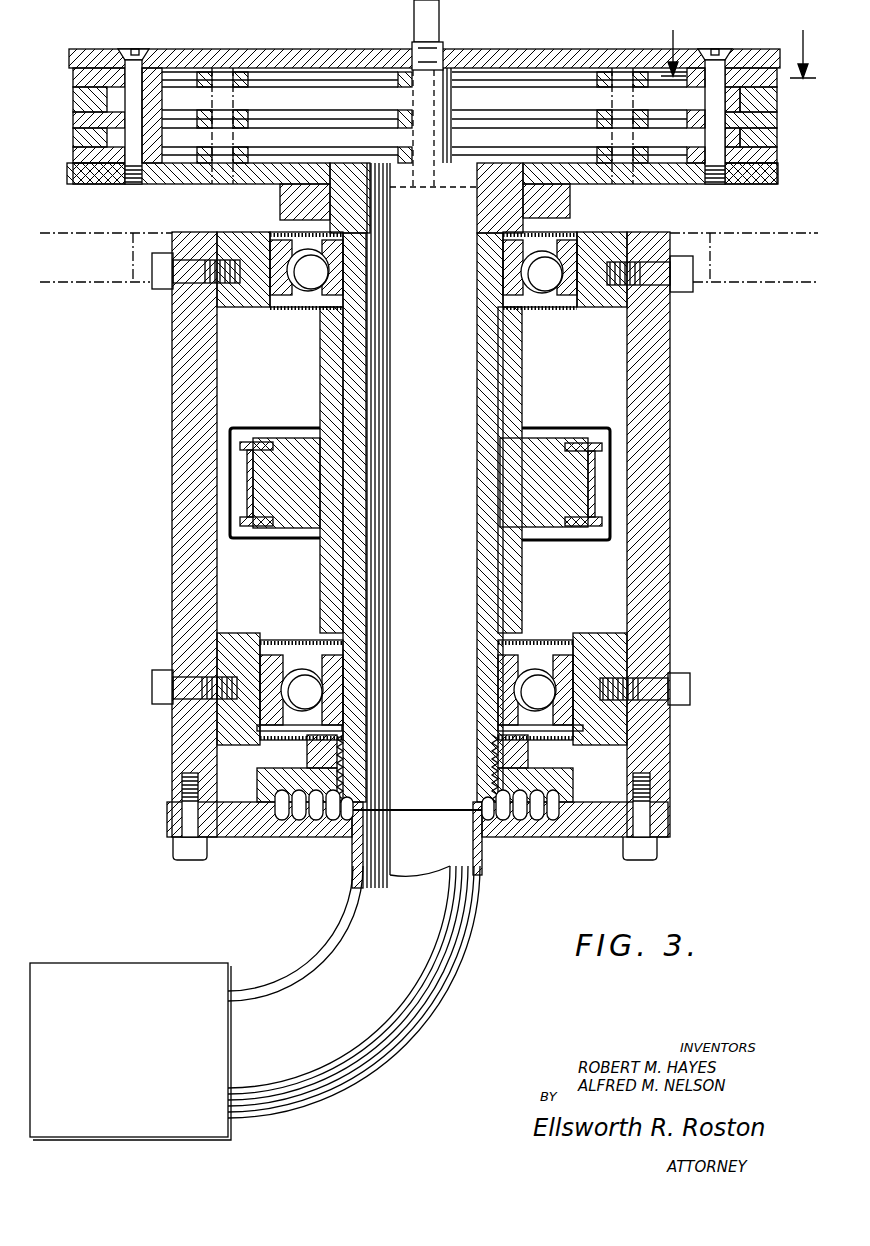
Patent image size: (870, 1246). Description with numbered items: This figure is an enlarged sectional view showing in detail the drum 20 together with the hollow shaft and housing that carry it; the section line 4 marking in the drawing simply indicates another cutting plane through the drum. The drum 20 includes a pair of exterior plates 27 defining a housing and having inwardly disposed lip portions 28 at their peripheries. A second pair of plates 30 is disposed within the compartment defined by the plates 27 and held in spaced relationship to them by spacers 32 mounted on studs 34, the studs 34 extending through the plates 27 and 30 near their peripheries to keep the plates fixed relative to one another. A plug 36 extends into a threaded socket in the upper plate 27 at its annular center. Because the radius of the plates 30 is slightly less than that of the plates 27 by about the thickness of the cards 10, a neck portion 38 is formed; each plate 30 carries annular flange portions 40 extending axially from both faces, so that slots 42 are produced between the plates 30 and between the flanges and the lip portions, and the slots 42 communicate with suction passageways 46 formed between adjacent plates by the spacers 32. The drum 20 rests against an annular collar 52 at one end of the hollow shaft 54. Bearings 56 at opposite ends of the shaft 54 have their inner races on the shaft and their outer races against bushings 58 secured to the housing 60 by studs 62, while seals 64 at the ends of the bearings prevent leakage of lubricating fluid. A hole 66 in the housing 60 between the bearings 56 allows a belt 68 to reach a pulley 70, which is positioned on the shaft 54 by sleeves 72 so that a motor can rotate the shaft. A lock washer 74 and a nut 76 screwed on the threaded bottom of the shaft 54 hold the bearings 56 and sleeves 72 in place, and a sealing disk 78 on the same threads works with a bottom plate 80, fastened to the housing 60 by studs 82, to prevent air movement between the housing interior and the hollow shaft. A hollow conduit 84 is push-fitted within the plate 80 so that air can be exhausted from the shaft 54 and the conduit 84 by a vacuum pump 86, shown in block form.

The section line 4- 4 is at (738, 42).
The cards 10 is at (73, 144).
The drum 20 is at (582, 46).
The exterior plates 27 is at (534, 54).
The lip portions 28 is at (102, 72).
The plates 30 is at (73, 126).
The spacers 32 is at (152, 70).
The studs 34 is at (129, 48).
The plug 36 is at (413, 20).
The neck portion 38 is at (778, 105).
The annular flange portions 40 is at (73, 92).
The slots 42 is at (330, 70).
The suction passageways 46 is at (538, 82).
The annular collar 52 is at (570, 200).
The hollow shaft 54 is at (483, 356).
The bearings 56 is at (528, 272).
The bushings 58 is at (602, 296).
The housing 60 is at (660, 541).
The studs 62 is at (151, 291).
The seals 64 is at (562, 232).
The hole 66 is at (588, 432).
The belt 68 is at (593, 483).
The pulley 70 is at (540, 444).
The sleeves 72 is at (510, 370).
The lock washer 74 is at (330, 729).
The nut 76 is at (318, 757).
The sealing disk 78 is at (270, 784).
The bottom plate 80 is at (550, 836).
The studs 82 is at (180, 848).
The hollow conduit 84 is at (353, 866).
The vacuum pump 86 is at (118, 977).